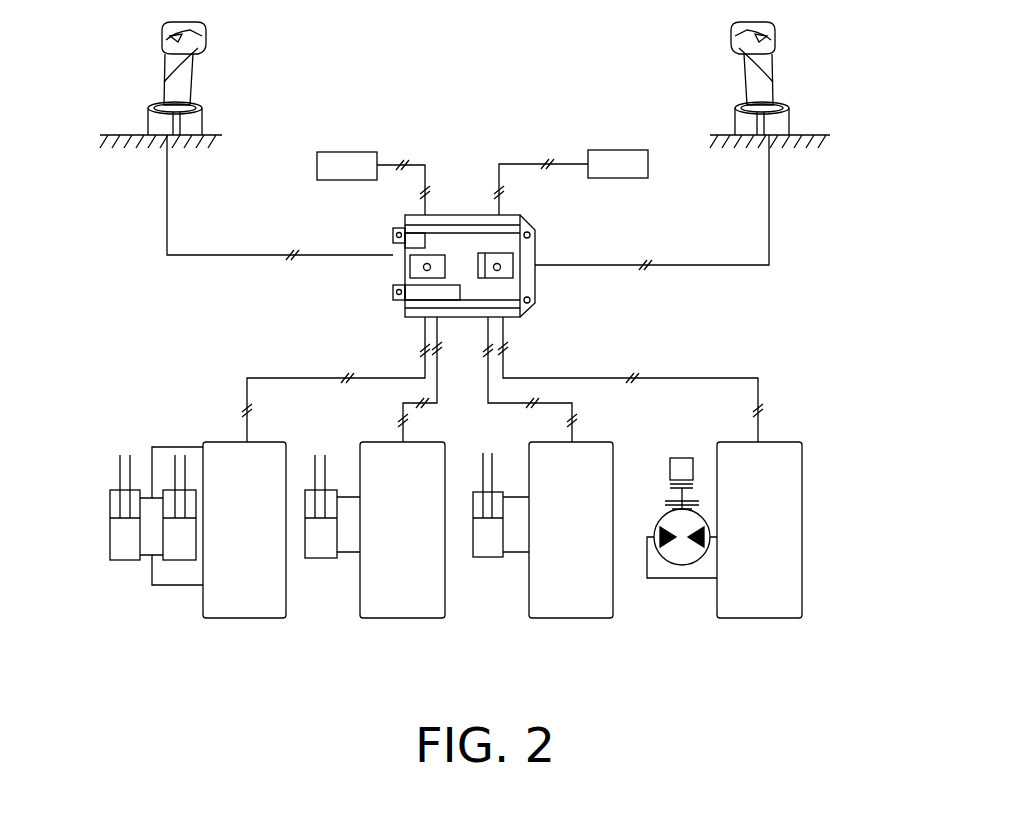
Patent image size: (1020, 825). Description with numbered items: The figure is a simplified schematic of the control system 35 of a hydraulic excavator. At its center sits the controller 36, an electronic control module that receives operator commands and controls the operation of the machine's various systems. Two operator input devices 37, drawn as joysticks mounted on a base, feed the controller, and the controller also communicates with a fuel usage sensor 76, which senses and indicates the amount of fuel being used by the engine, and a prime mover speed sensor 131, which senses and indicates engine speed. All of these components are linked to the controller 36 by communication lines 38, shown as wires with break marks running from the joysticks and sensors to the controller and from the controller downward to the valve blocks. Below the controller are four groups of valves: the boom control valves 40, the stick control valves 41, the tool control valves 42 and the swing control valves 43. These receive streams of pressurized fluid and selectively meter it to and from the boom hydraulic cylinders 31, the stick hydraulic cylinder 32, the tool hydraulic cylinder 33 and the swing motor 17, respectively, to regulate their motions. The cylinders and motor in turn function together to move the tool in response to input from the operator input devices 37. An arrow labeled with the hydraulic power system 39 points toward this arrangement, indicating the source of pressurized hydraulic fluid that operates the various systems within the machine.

The swing motor 17 is at (680, 565).
The boom hydraulic cylinders 31 is at (180, 538).
The stick hydraulic cylinder 32 is at (320, 557).
The tool hydraulic cylinder 33 is at (487, 557).
The control system 35 is at (790, 318).
The controller 36 is at (527, 273).
The operator input device 37 is at (172, 80).
The communication lines 38 is at (567, 162).
The hydraulic power system 39 is at (195, 331).
The boom control valves 40 is at (232, 602).
The stick control valves 41 is at (403, 602).
The tool control valves 42 is at (567, 600).
The swing control valves 43 is at (767, 607).
The fuel usage sensor 76 is at (357, 158).
The prime mover speed sensor 131 is at (613, 157).